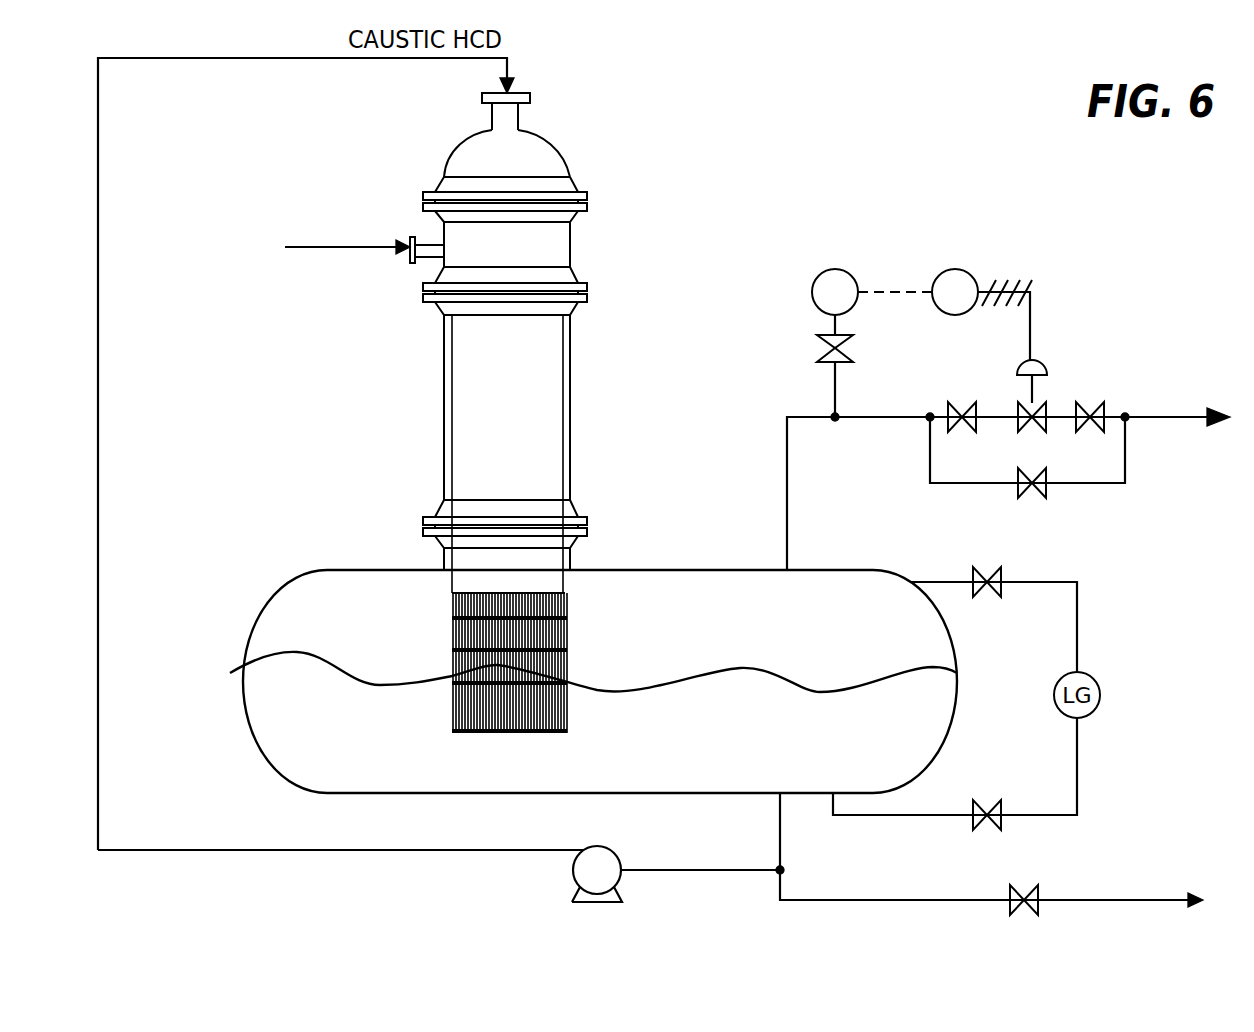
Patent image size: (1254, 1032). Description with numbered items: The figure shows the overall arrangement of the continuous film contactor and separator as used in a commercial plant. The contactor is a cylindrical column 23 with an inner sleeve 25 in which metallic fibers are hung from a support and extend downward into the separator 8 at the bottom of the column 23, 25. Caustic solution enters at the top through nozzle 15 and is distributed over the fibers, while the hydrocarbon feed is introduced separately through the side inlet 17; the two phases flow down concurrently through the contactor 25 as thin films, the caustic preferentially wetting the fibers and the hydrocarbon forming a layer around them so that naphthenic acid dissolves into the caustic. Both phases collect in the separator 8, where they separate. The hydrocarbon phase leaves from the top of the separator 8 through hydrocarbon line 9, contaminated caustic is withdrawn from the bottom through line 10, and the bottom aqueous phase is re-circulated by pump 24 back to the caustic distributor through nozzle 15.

The separator 8 is at (680, 570).
The hydrocarbon line 9 is at (797, 417).
The line 10 is at (780, 825).
The nozzle 15 is at (520, 128).
The hydrocarbon feed inlet 17 is at (413, 238).
The cylindrical column 23 is at (572, 383).
The pump 24 is at (607, 858).
The sleeve 25 is at (565, 457).